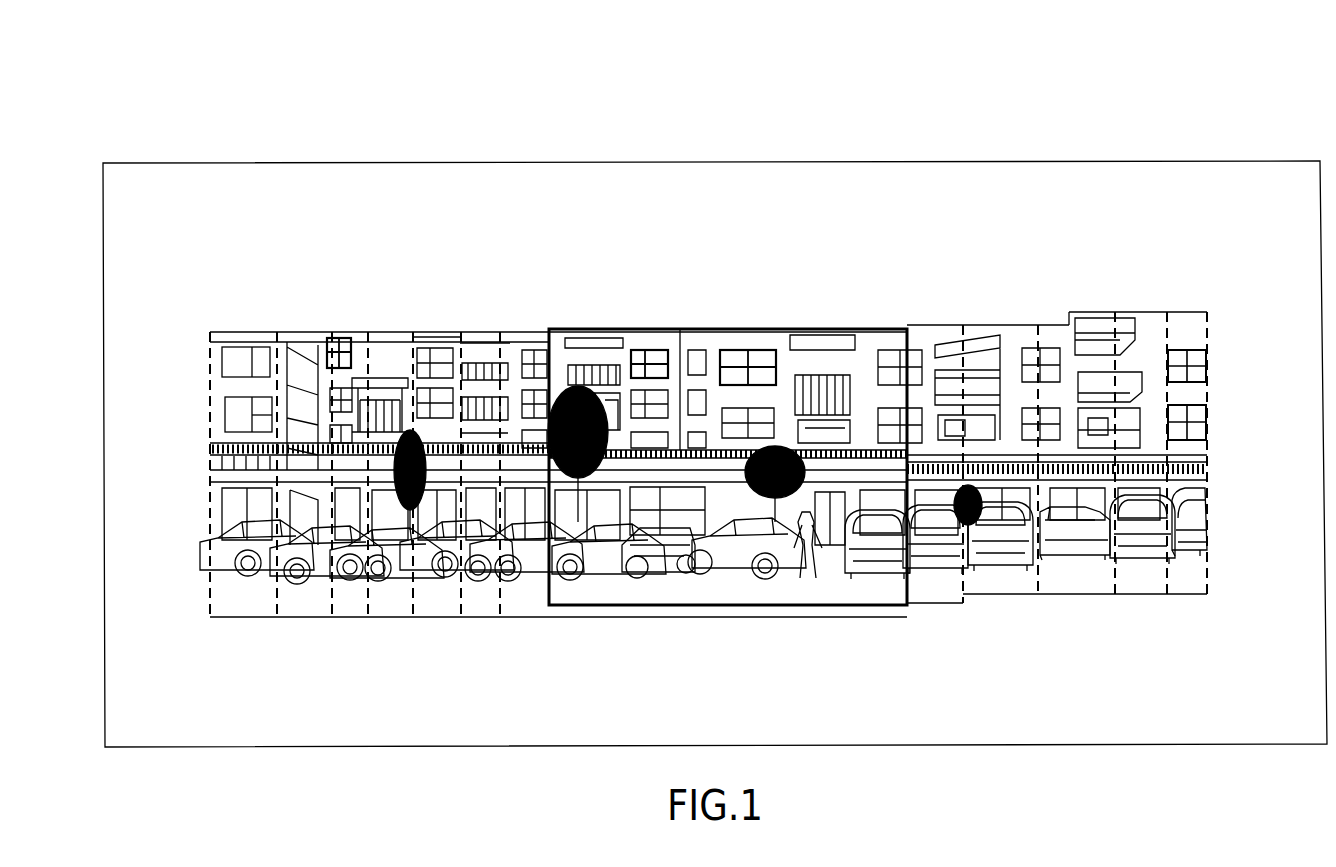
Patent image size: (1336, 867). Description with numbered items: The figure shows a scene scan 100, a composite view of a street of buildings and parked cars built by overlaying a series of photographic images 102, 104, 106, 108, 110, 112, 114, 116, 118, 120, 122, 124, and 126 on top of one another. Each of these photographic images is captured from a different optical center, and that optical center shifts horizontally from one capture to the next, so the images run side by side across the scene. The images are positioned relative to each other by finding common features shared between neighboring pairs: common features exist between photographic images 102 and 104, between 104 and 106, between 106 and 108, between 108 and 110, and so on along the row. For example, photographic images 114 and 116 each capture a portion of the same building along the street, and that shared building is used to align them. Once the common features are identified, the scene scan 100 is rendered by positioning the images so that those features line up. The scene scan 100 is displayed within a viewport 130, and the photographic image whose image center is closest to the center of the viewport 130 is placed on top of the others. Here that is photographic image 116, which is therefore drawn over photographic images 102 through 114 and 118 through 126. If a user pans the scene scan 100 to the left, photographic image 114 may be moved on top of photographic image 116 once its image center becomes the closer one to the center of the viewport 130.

The scene scan 100 is at (1316, 48).
The photographic image 102 is at (240, 330).
The photographic image 104 is at (305, 614).
The photographic image 106 is at (350, 328).
The photographic image 108 is at (398, 614).
The photographic image 110 is at (436, 338).
The photographic image 112 is at (485, 617).
The photographic image 114 is at (520, 330).
The photographic image 116 is at (732, 608).
The photographic image 118 is at (930, 324).
The photographic image 120 is at (1016, 596).
The photographic image 122 is at (1068, 316).
The photographic image 124 is at (1150, 596).
The photographic image 126 is at (1190, 312).
The viewport 130 is at (712, 162).